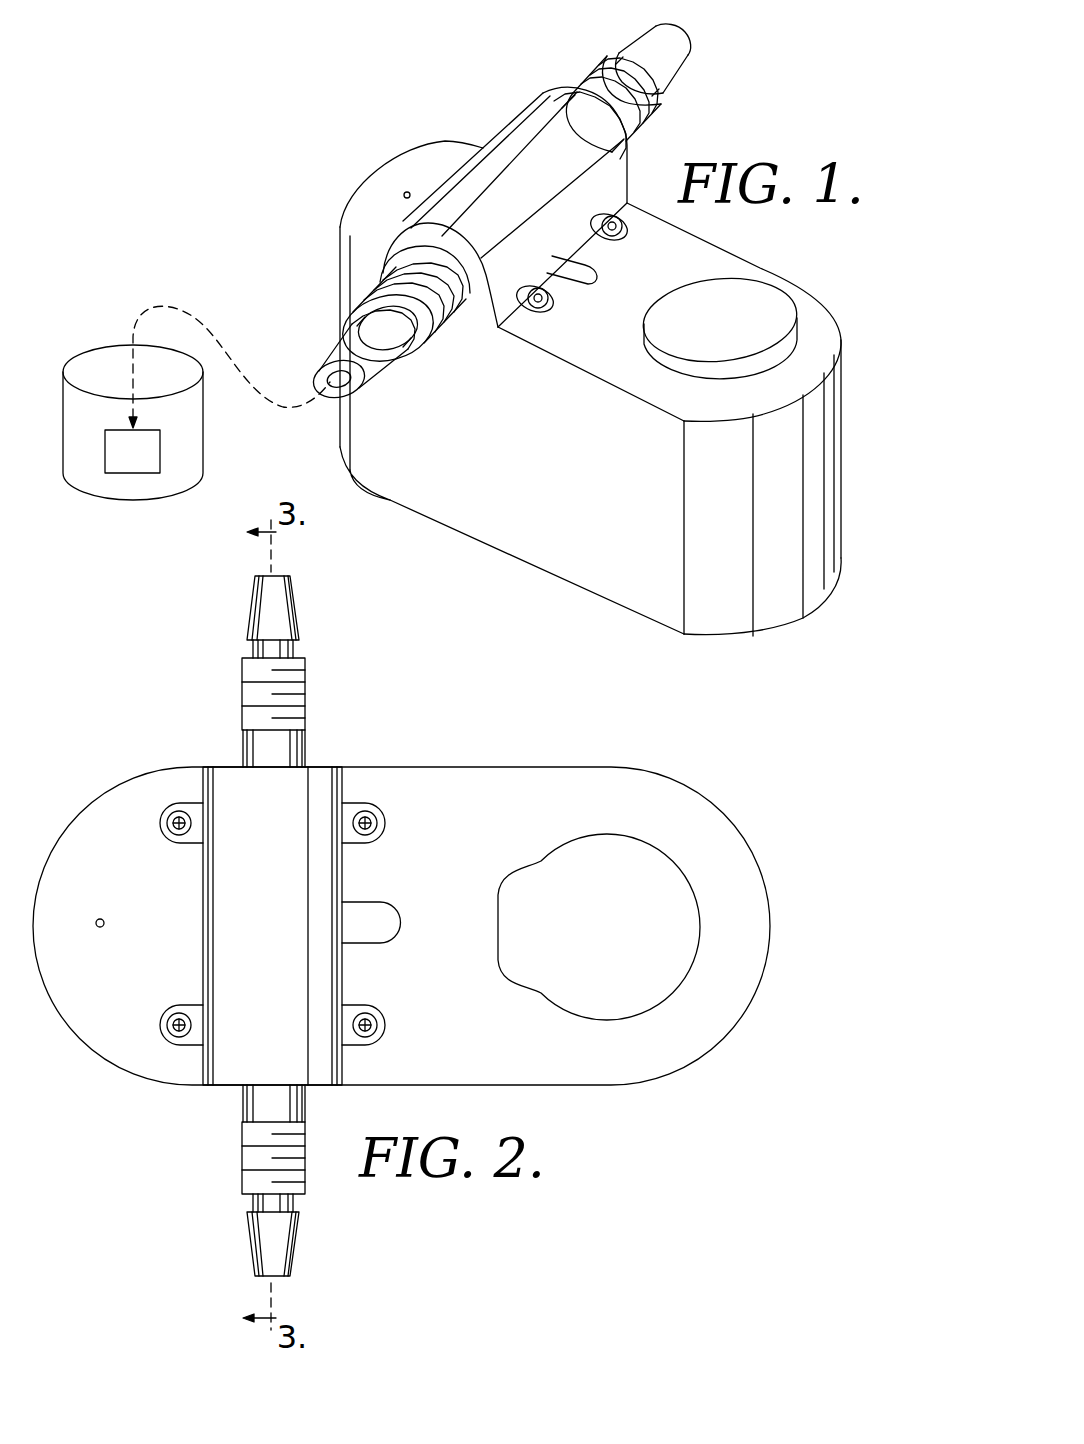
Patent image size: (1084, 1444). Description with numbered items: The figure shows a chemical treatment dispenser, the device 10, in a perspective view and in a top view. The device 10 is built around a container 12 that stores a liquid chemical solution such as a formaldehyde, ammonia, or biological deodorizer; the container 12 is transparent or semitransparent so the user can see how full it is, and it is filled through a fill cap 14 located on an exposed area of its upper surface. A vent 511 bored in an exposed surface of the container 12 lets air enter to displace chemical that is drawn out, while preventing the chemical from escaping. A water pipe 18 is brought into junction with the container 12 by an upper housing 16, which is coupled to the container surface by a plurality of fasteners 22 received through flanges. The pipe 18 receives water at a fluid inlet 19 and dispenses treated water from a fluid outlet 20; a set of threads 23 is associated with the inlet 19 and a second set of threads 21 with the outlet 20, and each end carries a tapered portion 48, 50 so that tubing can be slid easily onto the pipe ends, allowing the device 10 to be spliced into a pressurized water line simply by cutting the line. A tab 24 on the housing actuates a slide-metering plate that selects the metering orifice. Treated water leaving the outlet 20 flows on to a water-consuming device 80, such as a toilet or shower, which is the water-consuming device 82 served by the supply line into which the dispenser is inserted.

In FIG. 1, the device 10 is at (297, 260).
In FIG. 1, the container 12 is at (590, 388).
In FIG. 2, the container 12 is at (401, 926).
In FIG. 1, the fill cap 14 is at (720, 325).
In FIG. 2, the fill cap 14 is at (599, 927).
In FIG. 1, the upper housing 16 is at (500, 130).
In FIG. 2, the upper housing 16 is at (272, 926).
In FIG. 1, the water pipe 18 is at (633, 133).
In FIG. 2, the water pipe 18 is at (298, 752).
In FIG. 1, the fluid inlet 19 is at (682, 37).
In FIG. 2, the fluid inlet 19 is at (280, 578).
In FIG. 1, the fluid outlet 20 is at (334, 392).
In FIG. 2, the fluid outlet 20 is at (281, 1275).
In FIG. 1, the second set of threads 21 is at (433, 338).
In FIG. 2, the second set of threads 21 is at (305, 1146).
In FIG. 1, the fasteners 22 is at (627, 230).
In FIG. 2, the fasteners 22 is at (372, 812).
In FIG. 1, the set of threads 23 is at (600, 72).
In FIG. 2, the set of threads 23 is at (305, 692).
In FIG. 1, the tab 24 is at (600, 273).
In FIG. 2, the tab 24 is at (388, 898).
In FIG. 1, the tapered portion 48 is at (661, 55).
In FIG. 2, the tapered portion 48 is at (269, 591).
In FIG. 1, the tapered portion 50 is at (347, 374).
In FIG. 2, the tapered portion 50 is at (265, 1257).
In FIG. 1, the vent 511 is at (413, 192).
In FIG. 2, the vent 511 is at (102, 920).
In FIG. 1, the water-consuming device 80 is at (133, 422).
In FIG. 1, the water-consuming device 82 is at (217, 389).